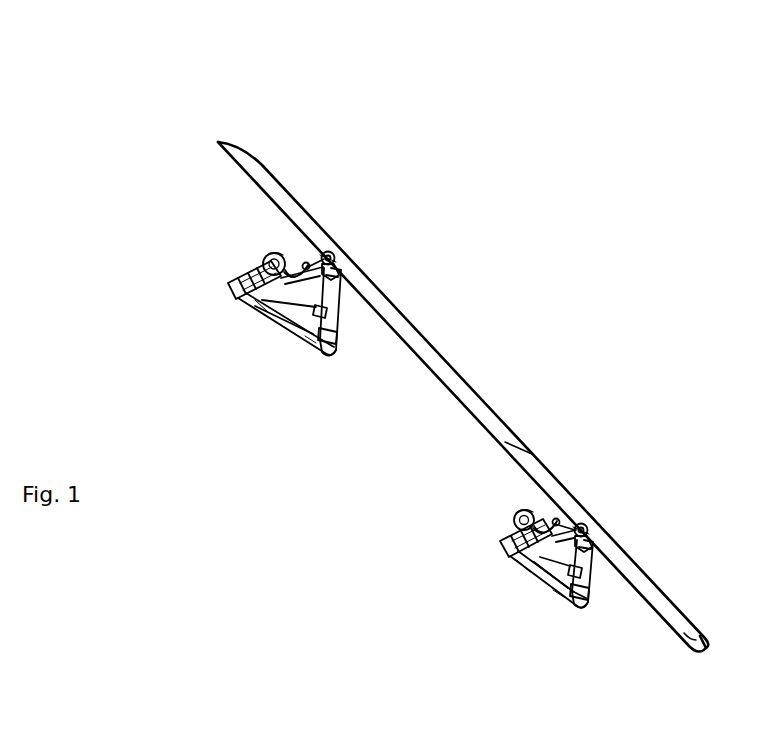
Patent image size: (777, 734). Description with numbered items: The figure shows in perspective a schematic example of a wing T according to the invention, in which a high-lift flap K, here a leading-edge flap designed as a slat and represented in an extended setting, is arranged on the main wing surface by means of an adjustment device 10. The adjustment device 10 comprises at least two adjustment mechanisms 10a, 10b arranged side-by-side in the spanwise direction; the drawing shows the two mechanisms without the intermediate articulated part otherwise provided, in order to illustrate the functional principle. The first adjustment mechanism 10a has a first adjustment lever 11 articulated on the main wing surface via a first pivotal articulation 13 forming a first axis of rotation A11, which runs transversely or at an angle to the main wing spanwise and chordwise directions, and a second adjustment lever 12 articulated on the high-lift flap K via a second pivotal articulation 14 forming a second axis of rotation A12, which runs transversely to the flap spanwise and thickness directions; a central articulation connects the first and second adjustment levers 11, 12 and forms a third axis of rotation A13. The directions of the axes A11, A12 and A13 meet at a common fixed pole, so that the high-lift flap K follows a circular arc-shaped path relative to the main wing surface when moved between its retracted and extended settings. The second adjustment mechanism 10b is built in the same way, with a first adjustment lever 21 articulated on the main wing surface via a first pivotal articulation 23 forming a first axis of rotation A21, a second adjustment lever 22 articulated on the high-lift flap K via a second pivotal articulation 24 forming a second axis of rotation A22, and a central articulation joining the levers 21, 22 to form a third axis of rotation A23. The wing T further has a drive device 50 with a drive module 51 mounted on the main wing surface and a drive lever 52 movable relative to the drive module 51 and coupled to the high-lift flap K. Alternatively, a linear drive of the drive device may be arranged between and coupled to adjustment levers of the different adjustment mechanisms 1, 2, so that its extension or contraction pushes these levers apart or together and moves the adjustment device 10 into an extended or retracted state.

The adjustment mechanism 1 is at (134, 374).
The adjustment mechanism 2 is at (296, 632).
The adjustment device 10 is at (144, 164).
The first adjustment mechanism 10a is at (416, 582).
The second adjustment mechanism 10b is at (146, 257).
The first adjustment lever 11 is at (596, 566).
The second adjustment lever 12 is at (540, 584).
The first pivotal articulation 13 is at (586, 527).
The second pivotal articulation 14 is at (490, 548).
The first adjustment lever 21 is at (343, 305).
The second adjustment lever 22 is at (266, 326).
The first pivotal articulation 23 is at (333, 257).
The second pivotal articulation 24 is at (228, 292).
The drive device 50 is at (290, 249).
The drive module 51 is at (262, 266).
The drive lever 52 is at (311, 256).
The first axis of rotation A11 is at (590, 529).
The second axis of rotation A12 is at (523, 567).
The third axis of rotation A13 is at (558, 599).
The first axis of rotation A21 is at (335, 258).
The second axis of rotation A22 is at (262, 309).
The third axis of rotation A23 is at (310, 346).
The wing T is at (512, 230).
The high-lift flap K is at (464, 379).